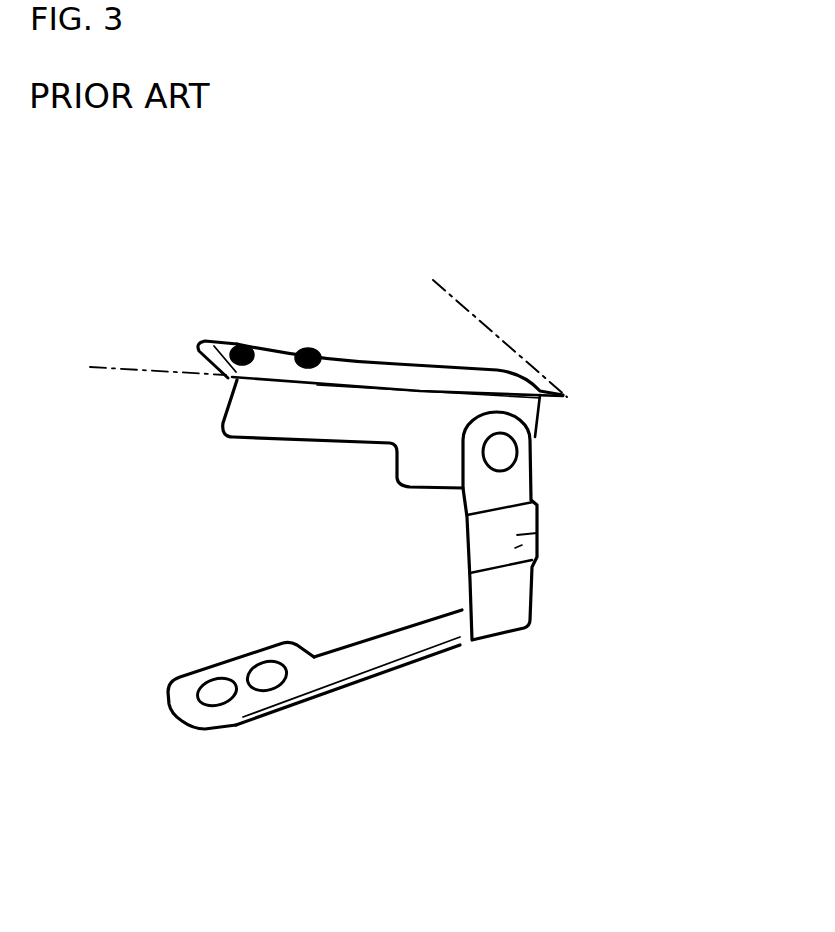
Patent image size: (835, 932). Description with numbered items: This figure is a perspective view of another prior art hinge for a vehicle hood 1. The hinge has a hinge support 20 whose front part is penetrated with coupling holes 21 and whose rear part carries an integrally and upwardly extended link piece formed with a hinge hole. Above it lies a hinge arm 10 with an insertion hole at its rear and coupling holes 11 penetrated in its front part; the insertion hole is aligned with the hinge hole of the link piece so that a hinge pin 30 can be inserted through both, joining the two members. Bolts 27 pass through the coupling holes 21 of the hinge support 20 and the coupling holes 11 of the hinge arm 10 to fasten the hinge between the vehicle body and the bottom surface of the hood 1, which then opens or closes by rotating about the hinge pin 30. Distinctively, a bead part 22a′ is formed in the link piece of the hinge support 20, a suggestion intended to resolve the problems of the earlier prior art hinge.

The hood 1 is at (468, 335).
The hinge arm 10 is at (397, 378).
The coupling holes 11 is at (227, 347).
The bolts 27 is at (243, 347).
The bead part 22a′ is at (538, 528).
The hinge pin 30 is at (518, 461).
The hinge support 20 is at (392, 652).
The coupling holes 21 is at (292, 683).